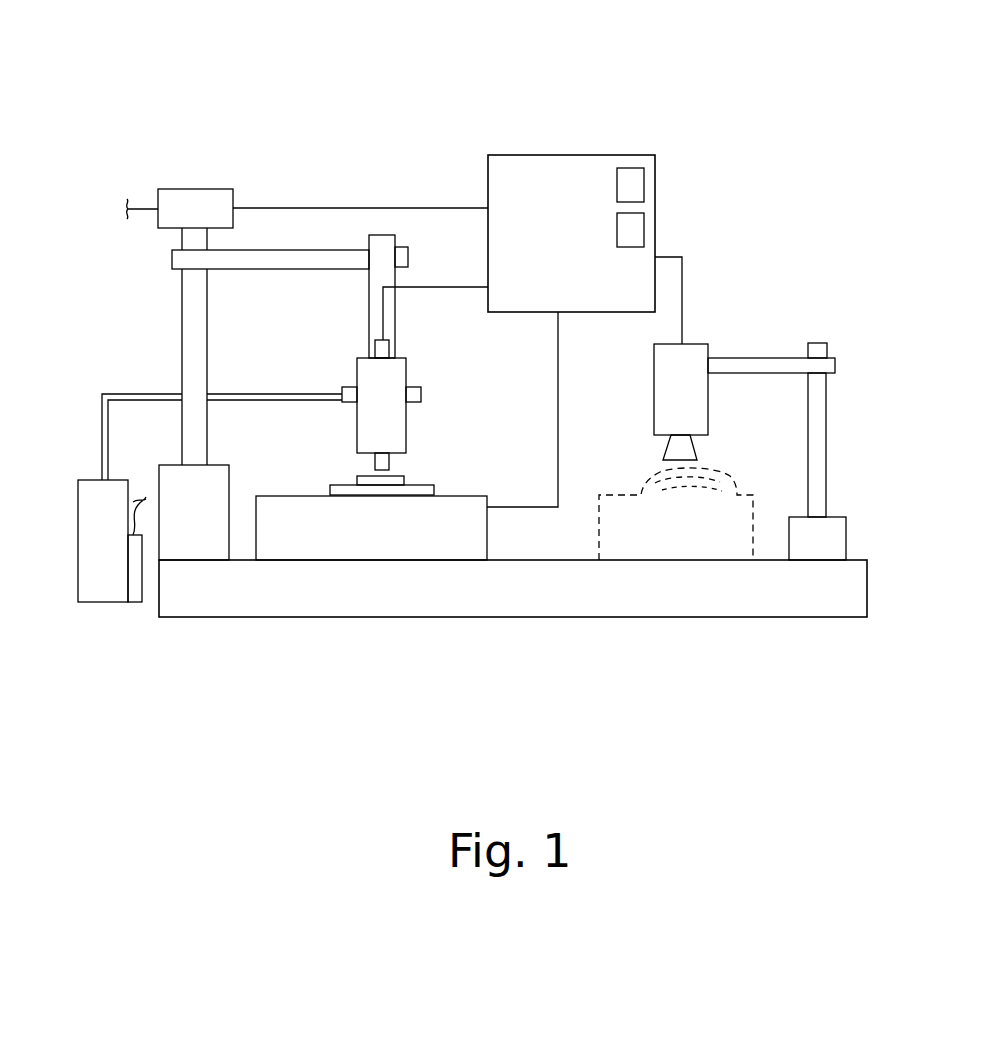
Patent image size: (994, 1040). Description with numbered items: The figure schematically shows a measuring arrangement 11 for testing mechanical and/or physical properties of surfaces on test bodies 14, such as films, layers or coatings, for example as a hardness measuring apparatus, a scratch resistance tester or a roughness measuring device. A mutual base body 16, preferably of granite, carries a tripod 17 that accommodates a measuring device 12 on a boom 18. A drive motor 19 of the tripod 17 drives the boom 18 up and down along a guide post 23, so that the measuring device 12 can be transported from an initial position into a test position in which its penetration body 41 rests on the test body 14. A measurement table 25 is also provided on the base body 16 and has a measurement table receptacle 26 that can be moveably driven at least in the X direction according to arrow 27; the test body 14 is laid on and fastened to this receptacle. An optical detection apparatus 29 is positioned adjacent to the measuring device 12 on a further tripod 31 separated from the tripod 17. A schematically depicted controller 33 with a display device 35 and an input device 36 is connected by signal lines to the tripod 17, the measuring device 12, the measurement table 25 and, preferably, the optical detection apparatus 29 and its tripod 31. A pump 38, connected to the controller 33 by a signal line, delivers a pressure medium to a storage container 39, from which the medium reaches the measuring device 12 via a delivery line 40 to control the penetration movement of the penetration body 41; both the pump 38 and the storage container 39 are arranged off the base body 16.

The measuring arrangement 11 is at (382, 130).
The measuring device 12 is at (372, 421).
The test body 14 is at (405, 482).
The base body 16 is at (567, 598).
The tripod 17 is at (146, 288).
The boom 18 is at (258, 262).
The drive motor 19 is at (188, 205).
The guide post 23 is at (195, 311).
The measurement table 25 is at (465, 538).
The measurement table receptacle 26 is at (434, 490).
The arrow 27 is at (400, 519).
The optical detection apparatus 29 is at (688, 398).
The further tripod 31 is at (818, 456).
The controller 33 is at (532, 165).
The display device 35 is at (636, 185).
The input device 36 is at (636, 224).
The pump 38 is at (134, 594).
The storage container 39 is at (100, 594).
The delivery line 40 is at (120, 394).
The penetration body 41 is at (374, 462).